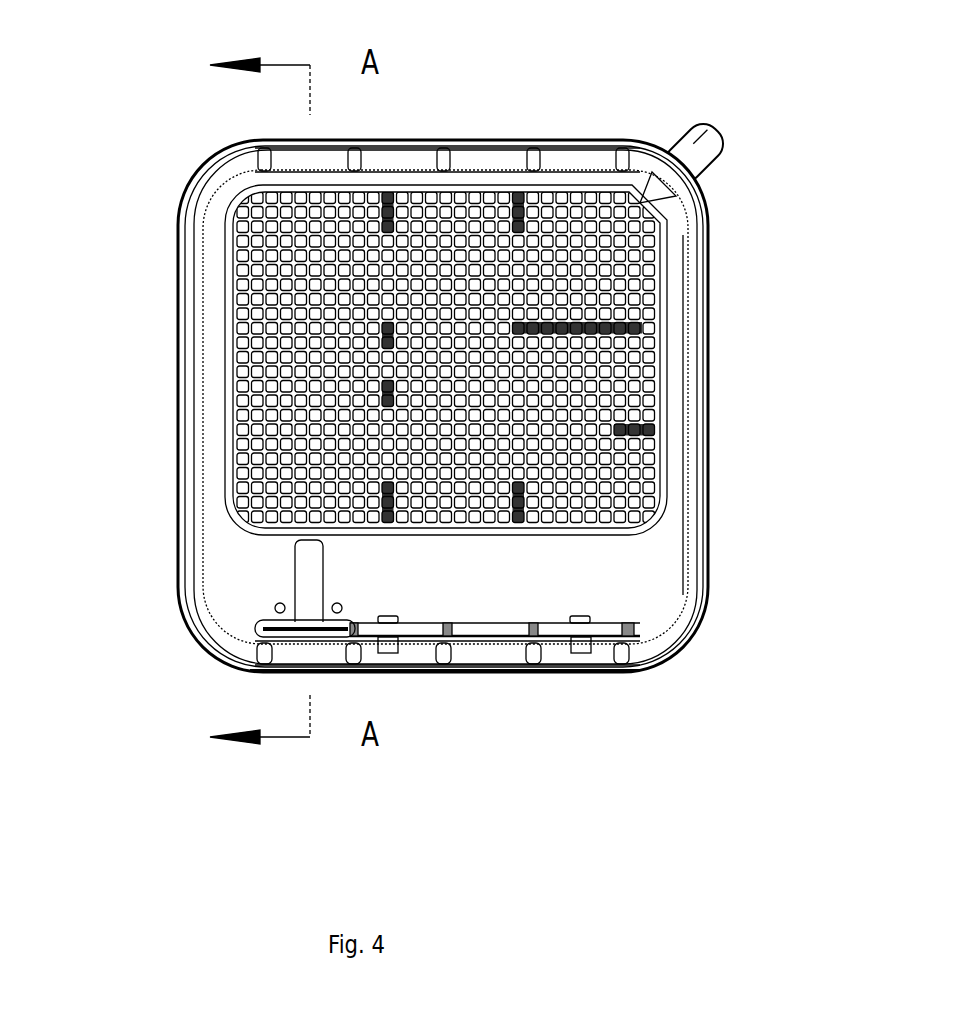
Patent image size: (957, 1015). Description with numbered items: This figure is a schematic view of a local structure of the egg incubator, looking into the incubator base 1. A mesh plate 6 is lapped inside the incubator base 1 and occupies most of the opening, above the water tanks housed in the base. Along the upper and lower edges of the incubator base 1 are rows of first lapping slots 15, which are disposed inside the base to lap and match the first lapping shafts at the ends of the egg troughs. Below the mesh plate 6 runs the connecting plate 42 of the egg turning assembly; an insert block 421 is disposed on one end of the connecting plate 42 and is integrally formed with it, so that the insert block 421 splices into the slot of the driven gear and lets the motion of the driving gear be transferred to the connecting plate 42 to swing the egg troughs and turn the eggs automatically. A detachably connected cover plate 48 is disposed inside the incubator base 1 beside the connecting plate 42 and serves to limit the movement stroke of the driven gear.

The incubator base 1 is at (710, 572).
The mesh plate 6 is at (655, 403).
The first lapping slot 15 is at (336, 368).
The connecting plate 42 is at (495, 717).
The insert block 421 is at (645, 665).
The cover plate 48 is at (195, 532).